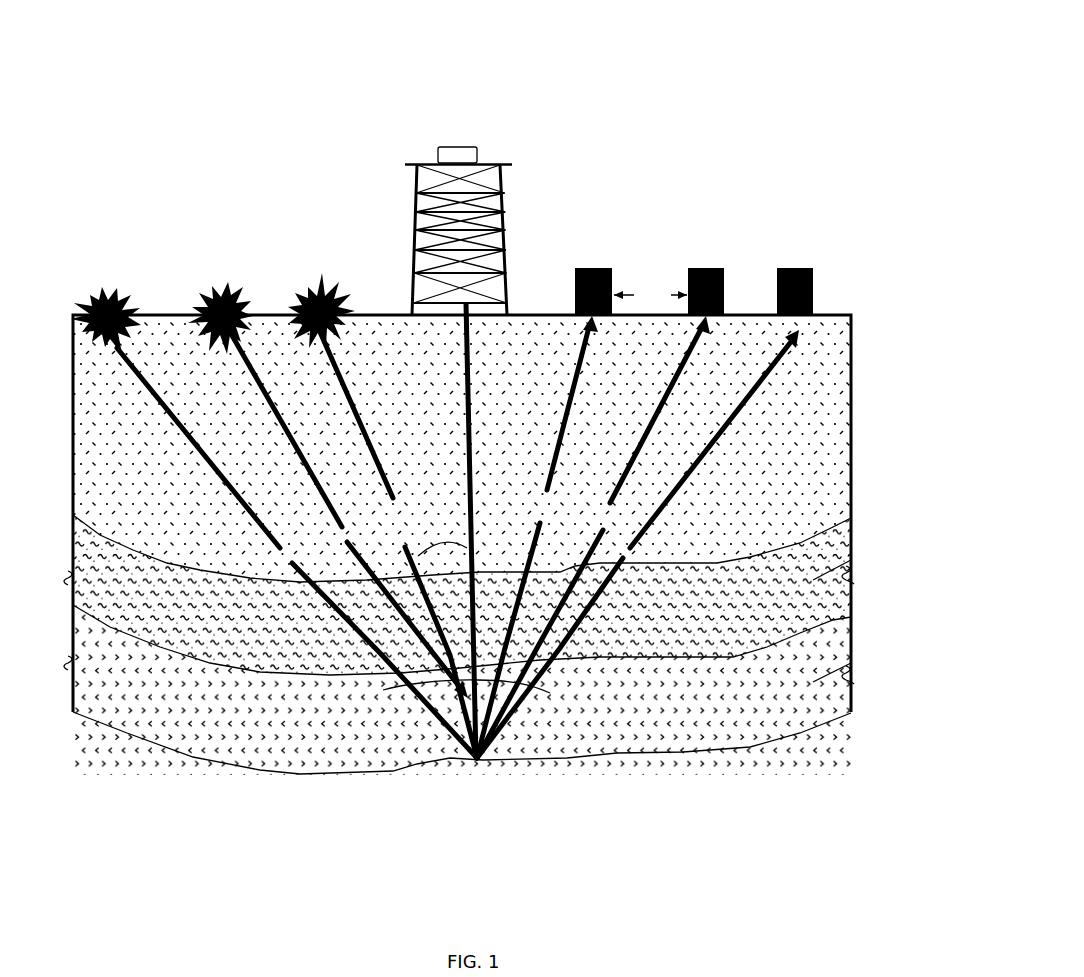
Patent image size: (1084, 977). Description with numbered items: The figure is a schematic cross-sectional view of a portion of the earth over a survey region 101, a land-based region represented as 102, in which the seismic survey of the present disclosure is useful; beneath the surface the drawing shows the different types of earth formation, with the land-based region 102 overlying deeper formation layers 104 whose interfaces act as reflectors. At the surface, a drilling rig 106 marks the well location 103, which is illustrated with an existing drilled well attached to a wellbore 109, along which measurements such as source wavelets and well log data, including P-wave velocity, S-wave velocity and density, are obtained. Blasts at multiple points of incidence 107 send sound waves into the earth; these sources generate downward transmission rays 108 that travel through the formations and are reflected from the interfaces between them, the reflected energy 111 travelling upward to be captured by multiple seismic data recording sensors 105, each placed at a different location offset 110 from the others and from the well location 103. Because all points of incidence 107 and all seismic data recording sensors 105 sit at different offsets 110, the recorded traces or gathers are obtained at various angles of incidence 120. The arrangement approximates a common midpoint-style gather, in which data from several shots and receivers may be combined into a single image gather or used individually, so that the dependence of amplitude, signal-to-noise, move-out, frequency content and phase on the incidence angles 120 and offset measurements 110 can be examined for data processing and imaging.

The survey region 101 is at (622, 47).
The land-based region 102 is at (808, 415).
The well location 103 is at (858, 555).
The third subsurface formation layer 104 is at (851, 656).
The seismic data recording sensors 105 is at (792, 268).
The drilling rig 106 is at (503, 186).
The points of incidence 107 is at (73, 296).
The downward transmission rays 108 is at (383, 690).
The wellbore 109 is at (474, 393).
The location offsets 110 is at (650, 295).
The reflection point 111 is at (550, 693).
The angles of incidence 120 is at (440, 540).